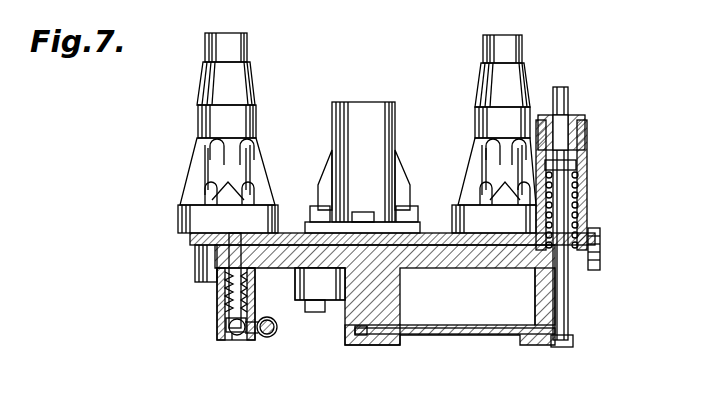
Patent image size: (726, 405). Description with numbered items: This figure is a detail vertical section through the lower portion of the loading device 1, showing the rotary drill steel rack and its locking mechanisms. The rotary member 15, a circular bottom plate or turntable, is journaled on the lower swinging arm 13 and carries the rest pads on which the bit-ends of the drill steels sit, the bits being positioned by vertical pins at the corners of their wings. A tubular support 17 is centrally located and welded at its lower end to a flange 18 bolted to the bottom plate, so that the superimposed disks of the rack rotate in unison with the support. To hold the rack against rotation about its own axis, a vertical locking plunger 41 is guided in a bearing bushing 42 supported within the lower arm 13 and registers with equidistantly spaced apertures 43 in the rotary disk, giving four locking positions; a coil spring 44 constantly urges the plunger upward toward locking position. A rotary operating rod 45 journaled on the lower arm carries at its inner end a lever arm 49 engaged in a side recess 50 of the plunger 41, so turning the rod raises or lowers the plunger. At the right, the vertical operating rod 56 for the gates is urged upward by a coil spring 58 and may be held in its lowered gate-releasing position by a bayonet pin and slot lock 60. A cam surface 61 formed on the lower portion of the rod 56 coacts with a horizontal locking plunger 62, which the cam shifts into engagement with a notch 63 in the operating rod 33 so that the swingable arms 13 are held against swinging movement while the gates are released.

The loading device 1 is at (176, 234).
The swinging arm 13 is at (516, 260).
The rotary member 15 is at (445, 234).
The tubular support 17 is at (396, 124).
The flange 18 is at (435, 255).
The operating rod 33 is at (352, 340).
The locking plunger 41 is at (232, 292).
The bearing bushing 42 is at (196, 263).
The aperture 43 is at (232, 240).
The coil spring 44 is at (250, 296).
The rotary operating rod 45 is at (267, 338).
The lever arm 49 is at (236, 336).
The side recess 50 is at (228, 334).
The vertical operating rod 56 is at (585, 178).
The coil spring 58 is at (588, 200).
The bayonet pin and slot lock 60 is at (560, 130).
The cam surface 61 is at (570, 332).
The horizontal locking plunger 62 is at (470, 336).
The notch 63 is at (361, 336).